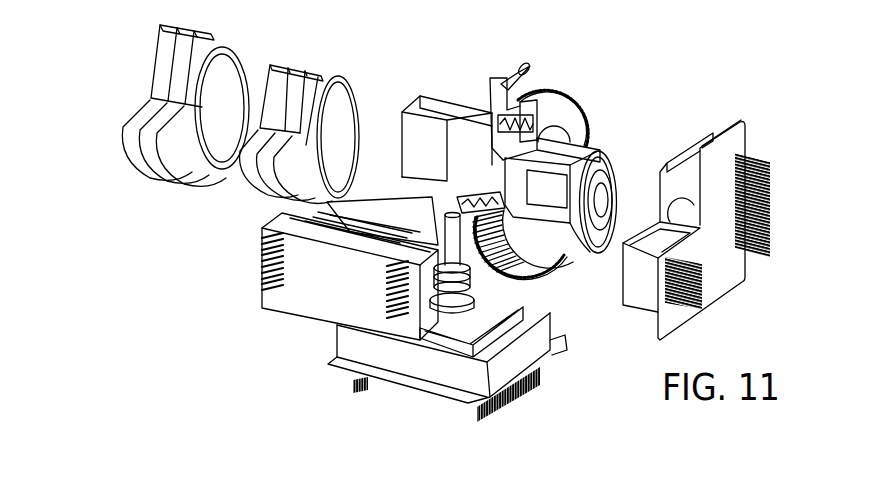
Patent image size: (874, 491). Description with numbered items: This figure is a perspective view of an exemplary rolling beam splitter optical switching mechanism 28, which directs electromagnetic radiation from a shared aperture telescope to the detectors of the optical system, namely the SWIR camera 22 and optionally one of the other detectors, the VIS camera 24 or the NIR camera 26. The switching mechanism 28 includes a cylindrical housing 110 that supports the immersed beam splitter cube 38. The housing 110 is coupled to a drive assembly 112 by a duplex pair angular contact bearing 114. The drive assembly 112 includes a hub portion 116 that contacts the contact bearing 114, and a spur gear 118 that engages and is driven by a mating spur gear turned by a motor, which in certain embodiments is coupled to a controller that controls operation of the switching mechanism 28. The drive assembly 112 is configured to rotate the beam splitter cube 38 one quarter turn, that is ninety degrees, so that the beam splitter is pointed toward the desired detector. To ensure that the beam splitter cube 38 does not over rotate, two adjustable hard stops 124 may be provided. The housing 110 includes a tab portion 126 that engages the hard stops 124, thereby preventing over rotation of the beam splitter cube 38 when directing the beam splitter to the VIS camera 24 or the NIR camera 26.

The short-wave infrared (SWIR) camera 22 is at (673, 212).
The visible (VIS) camera 24 is at (507, 320).
The near infrared (NIR) camera 26 is at (343, 238).
The rolling beam splitter optical switching mechanism 28 is at (180, 239).
The immersed beam splitter cube 38 is at (467, 198).
The cylindrical housing 110 is at (440, 100).
The drive assembly 112 is at (572, 78).
The duplex pair angular contact bearing 114 is at (530, 279).
The hub portion 116 is at (587, 152).
The spur gear 118 is at (580, 117).
The adjustable hard stop 124 is at (450, 213).
The tab portion 126 is at (492, 92).